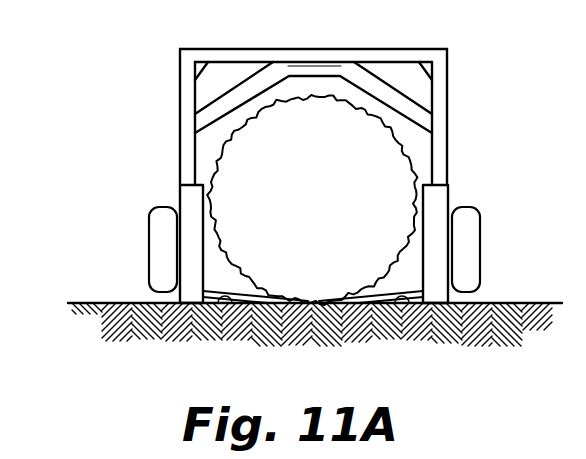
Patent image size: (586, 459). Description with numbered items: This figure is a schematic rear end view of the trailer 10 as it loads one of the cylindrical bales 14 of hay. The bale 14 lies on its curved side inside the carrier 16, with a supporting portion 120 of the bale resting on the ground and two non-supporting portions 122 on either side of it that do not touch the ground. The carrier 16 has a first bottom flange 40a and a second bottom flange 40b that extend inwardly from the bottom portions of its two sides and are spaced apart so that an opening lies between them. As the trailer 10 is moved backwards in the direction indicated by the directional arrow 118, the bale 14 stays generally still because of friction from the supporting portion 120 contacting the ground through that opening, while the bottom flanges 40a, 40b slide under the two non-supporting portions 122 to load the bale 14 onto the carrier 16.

The trailer 10 is at (351, 163).
The bale 14 is at (214, 146).
The carrier 16 is at (456, 142).
The first bottom flange 40a is at (218, 291).
The second bottom flange 40b is at (408, 292).
The directional arrow 118 is at (12, 13).
The supporting portion 120 is at (316, 303).
The non-supporting portions 122 is at (240, 272).